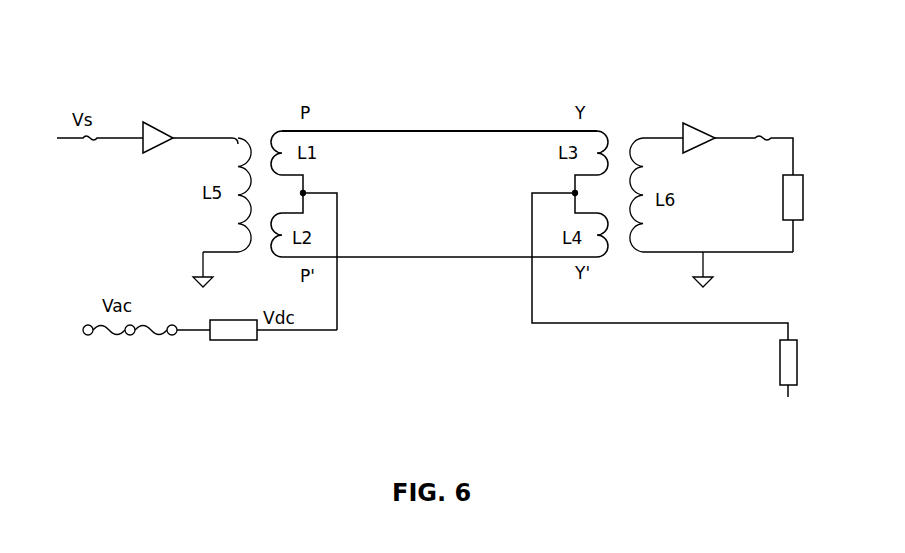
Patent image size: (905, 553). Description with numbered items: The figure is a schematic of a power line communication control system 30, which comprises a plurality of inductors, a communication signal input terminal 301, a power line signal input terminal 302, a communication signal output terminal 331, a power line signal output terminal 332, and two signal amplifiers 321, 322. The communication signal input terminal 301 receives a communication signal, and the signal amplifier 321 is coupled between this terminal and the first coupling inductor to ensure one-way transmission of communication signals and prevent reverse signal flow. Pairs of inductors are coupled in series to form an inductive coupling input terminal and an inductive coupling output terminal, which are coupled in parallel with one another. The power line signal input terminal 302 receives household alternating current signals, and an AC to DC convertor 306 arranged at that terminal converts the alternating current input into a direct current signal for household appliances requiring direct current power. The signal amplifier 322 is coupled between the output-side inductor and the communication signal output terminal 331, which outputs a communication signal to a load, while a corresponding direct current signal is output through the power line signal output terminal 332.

The power line communication control system 30 is at (468, 53).
The communication signal input terminal 301 is at (80, 141).
The power line signal input terminal 302 is at (124, 349).
The AC to DC convertor 306 is at (273, 319).
The signal amplifier 321 is at (158, 127).
The signal amplifier 322 is at (699, 125).
The communication signal output terminal 331 is at (813, 213).
The power line signal output terminal 332 is at (808, 368).